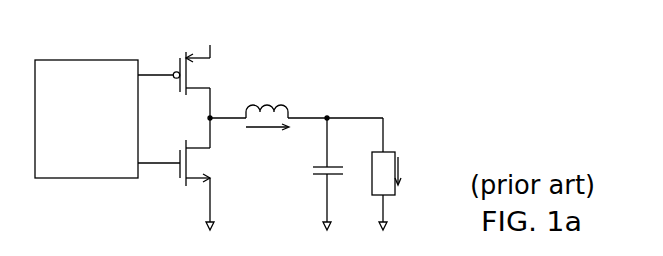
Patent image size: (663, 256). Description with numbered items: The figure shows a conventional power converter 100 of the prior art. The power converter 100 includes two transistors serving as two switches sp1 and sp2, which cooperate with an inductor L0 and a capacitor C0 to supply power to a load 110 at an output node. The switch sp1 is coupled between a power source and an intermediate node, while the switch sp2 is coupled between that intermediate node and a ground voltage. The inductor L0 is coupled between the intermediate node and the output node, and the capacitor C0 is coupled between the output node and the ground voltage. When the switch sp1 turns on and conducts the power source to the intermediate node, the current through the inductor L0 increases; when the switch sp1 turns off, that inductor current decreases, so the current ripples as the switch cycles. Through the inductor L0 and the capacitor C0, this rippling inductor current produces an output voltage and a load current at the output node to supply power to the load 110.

The power converter 100 is at (239, 132).
The load 110 is at (386, 152).
The switch sp1 is at (206, 73).
The switch sp2 is at (206, 163).
The inductor L0 is at (267, 104).
The capacitor C0 is at (316, 172).